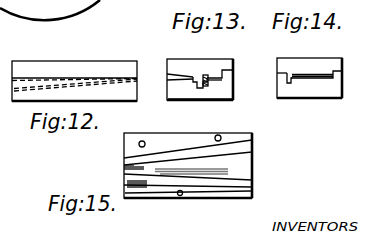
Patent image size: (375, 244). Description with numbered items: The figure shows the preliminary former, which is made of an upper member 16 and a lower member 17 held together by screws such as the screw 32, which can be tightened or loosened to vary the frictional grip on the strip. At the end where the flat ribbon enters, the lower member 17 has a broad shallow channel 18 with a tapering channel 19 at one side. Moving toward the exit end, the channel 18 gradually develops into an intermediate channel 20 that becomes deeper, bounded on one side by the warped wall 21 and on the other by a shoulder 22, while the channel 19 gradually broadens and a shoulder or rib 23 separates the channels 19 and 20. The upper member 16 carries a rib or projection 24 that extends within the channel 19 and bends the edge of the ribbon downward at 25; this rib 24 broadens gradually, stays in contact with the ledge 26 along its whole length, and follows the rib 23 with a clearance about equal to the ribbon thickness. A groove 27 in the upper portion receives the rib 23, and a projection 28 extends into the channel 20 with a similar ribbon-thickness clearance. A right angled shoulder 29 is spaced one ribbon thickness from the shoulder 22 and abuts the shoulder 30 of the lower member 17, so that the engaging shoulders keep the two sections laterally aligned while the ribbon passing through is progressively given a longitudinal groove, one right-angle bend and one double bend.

In FIG. 12, the upper member 16 is at (52, 72).
In FIG. 13, the upper member 16 is at (220, 68).
In FIG. 12, the lower member 17 is at (33, 93).
In FIG. 13, the lower member 17 is at (218, 93).
In FIG. 14, the broad shallow channel 18 is at (323, 87).
In FIG. 15, the broad shallow channel 18 is at (242, 158).
In FIG. 14, the tapering channel 19 is at (288, 84).
In FIG. 15, the tapering channel 19 is at (215, 174).
In FIG. 15, the intermediate channel 20 is at (195, 167).
In FIG. 15, the warped wall 21 is at (213, 176).
In FIG. 13, the shoulder 22 is at (204, 88).
In FIG. 15, the shoulder 22 is at (165, 158).
In FIG. 13, the shoulder or rib 23 is at (219, 84).
In FIG. 15, the shoulder or rib 23 is at (168, 175).
In FIG. 14, the rib or projection 24 is at (289, 78).
In FIG. 14, the downward bend of ribbon edge 25 is at (297, 83).
In FIG. 15, the ledge 26 is at (198, 194).
In FIG. 13, the groove 27 is at (209, 75).
In FIG. 13, the projection 28 is at (193, 77).
In FIG. 13, the right angled shoulder 29 is at (202, 82).
In FIG. 13, the shoulder 30 is at (193, 78).
In FIG. 15, the shoulder 30 is at (188, 148).
In FIG. 15, the screw 32 is at (125, 145).